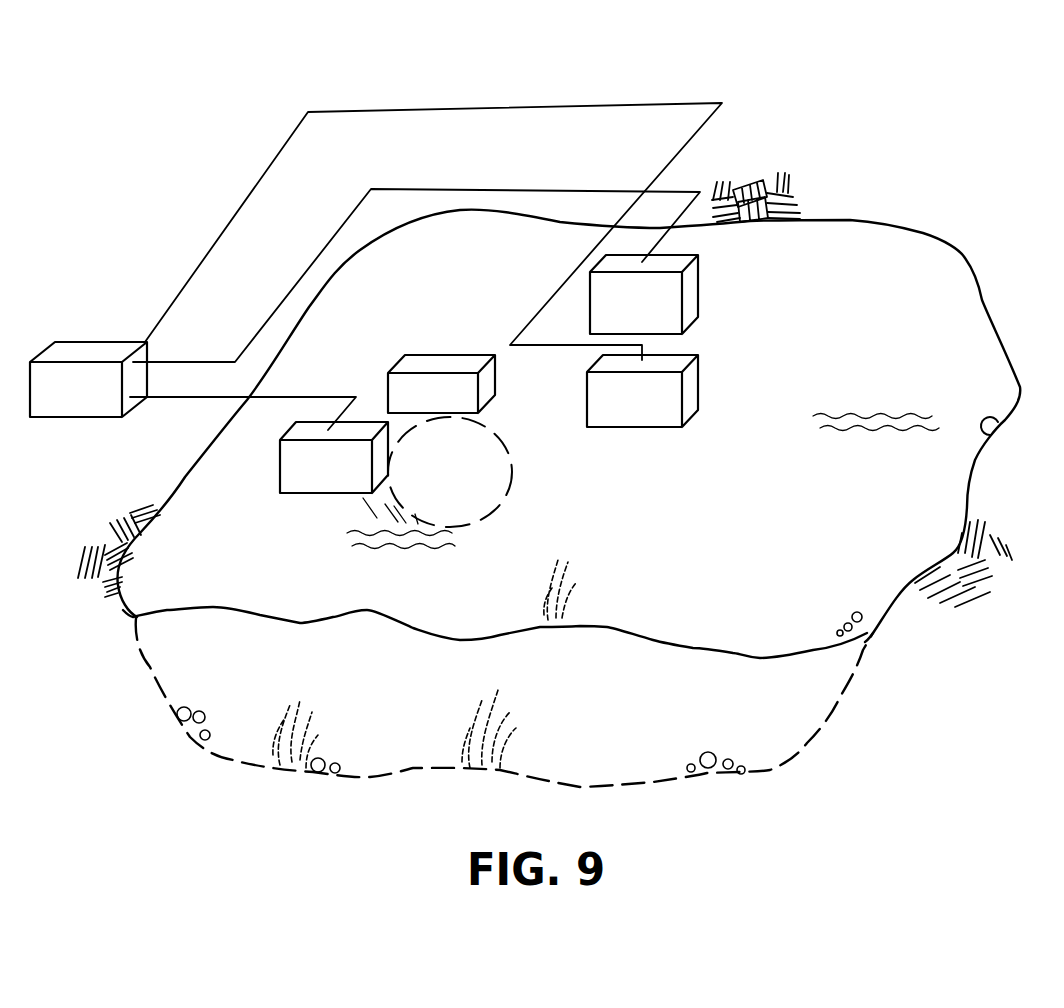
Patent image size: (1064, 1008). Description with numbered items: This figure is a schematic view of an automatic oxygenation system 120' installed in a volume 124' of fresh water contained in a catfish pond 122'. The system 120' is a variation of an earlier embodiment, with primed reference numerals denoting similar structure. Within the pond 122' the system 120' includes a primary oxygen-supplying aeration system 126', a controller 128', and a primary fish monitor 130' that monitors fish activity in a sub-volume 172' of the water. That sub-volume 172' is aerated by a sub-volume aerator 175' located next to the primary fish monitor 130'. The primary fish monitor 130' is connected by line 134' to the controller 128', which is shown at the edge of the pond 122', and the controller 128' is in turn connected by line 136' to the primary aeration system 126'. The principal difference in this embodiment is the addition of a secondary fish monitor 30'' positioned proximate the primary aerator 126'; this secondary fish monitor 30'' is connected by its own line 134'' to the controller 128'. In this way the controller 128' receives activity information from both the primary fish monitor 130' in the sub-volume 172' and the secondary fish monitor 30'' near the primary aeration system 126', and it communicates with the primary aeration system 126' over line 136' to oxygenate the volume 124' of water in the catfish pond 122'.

The automatic oxygenation system 120' is at (767, 74).
The catfish pond 122' is at (1022, 431).
The volume of fresh water 124' is at (549, 480).
The primary oxygen-supplying aeration system 126' is at (675, 294).
The controller 128' is at (92, 355).
The primary fish monitor 130' is at (365, 457).
The line 134' is at (248, 395).
The line 134'' is at (433, 215).
The line 136' is at (416, 255).
The sub-volume 172' is at (489, 472).
The sub-volume aerator 175' is at (470, 384).
The secondary fish monitor 30'' is at (674, 391).